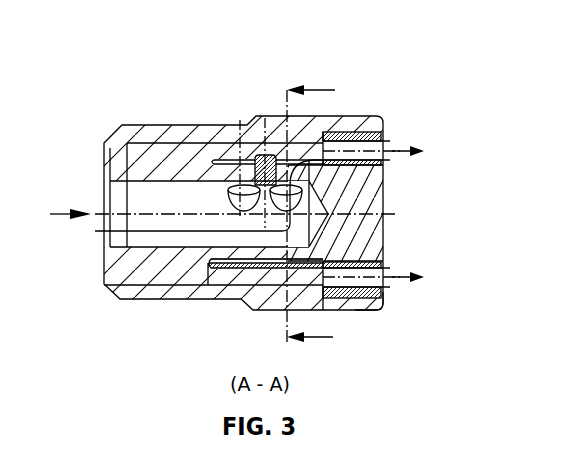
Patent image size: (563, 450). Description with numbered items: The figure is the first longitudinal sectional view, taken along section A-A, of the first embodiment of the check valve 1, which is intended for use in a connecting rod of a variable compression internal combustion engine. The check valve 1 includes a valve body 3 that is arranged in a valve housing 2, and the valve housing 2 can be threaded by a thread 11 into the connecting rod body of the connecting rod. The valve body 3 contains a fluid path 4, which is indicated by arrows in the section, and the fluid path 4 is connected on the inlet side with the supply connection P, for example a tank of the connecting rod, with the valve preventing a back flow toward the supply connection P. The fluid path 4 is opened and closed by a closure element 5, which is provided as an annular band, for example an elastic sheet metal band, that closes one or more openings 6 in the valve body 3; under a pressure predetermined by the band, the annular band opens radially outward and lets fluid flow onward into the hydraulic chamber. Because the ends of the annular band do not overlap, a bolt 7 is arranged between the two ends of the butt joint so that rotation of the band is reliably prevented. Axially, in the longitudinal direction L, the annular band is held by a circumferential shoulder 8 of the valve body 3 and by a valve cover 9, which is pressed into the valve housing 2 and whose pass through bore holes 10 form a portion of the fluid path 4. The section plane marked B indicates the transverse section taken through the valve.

The check valve 1 is at (478, 123).
The valve housing 2 is at (157, 112).
The valve body 3 is at (398, 226).
The fluid path 4 is at (427, 152).
The closure element 5 is at (243, 272).
The openings 6 is at (236, 184).
The bolt 7 is at (264, 154).
The circumferential shoulder 8 is at (219, 272).
The valve cover 9 is at (386, 292).
The pass through bore holes 10 is at (386, 140).
The thread 11 is at (372, 311).
The longitudinal direction L is at (103, 200).
The supply connection P is at (56, 214).
The section line B- B is at (319, 213).